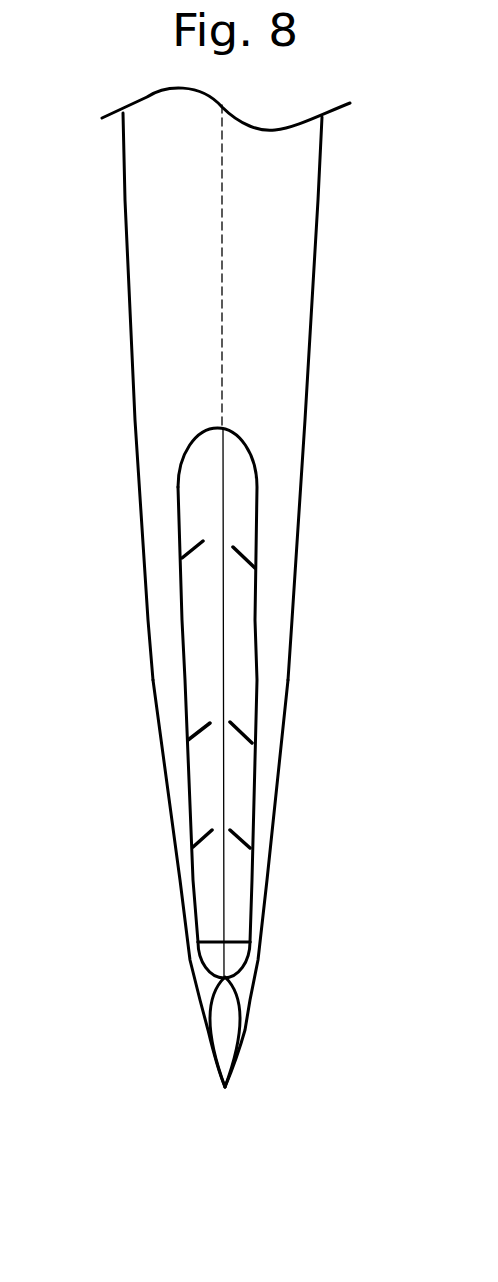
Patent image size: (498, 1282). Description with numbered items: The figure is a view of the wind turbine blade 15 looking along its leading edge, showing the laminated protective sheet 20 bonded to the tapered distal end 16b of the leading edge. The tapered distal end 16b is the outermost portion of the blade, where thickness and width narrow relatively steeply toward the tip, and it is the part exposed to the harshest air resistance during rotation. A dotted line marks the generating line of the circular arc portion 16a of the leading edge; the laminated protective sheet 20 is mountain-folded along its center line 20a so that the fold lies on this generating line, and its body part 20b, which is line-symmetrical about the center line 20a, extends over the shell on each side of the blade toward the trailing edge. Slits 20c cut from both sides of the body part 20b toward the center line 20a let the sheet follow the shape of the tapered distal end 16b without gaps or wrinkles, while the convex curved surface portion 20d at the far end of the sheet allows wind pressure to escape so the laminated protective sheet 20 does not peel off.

The wind turbine blade 15 is at (247, 587).
The circular arc portion 16a is at (260, 298).
The tapered distal end 16b is at (253, 892).
The laminated protective sheet 20 is at (229, 719).
The center line 20a is at (225, 465).
The body part 20b is at (240, 507).
The slits 20c is at (181, 553).
The convex curved surface portion 20d is at (240, 972).